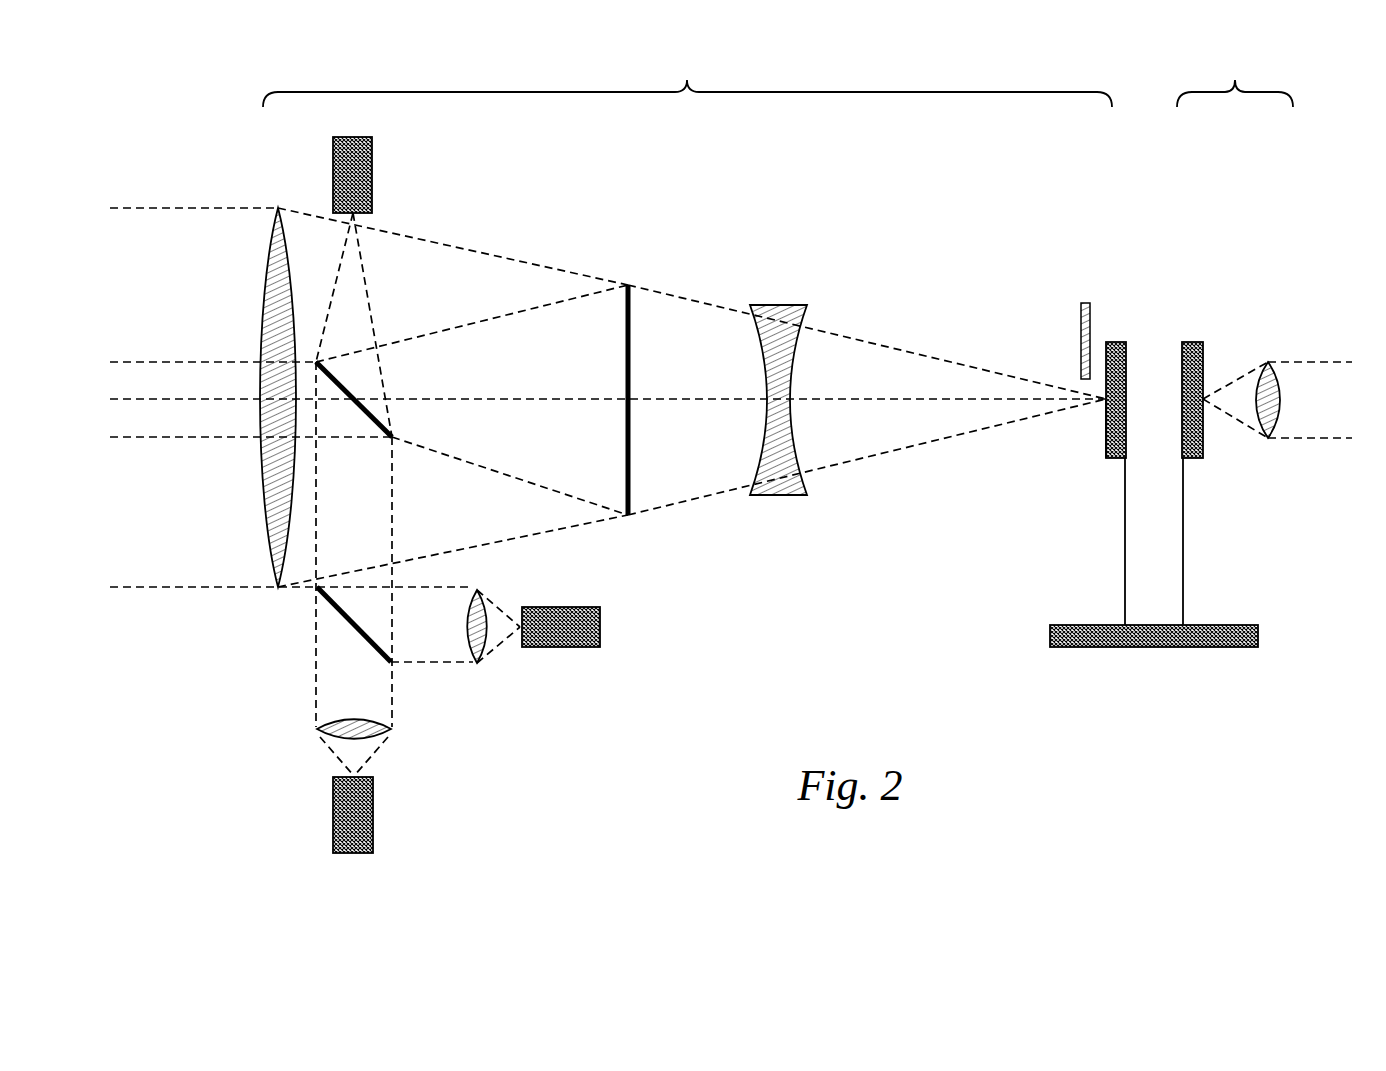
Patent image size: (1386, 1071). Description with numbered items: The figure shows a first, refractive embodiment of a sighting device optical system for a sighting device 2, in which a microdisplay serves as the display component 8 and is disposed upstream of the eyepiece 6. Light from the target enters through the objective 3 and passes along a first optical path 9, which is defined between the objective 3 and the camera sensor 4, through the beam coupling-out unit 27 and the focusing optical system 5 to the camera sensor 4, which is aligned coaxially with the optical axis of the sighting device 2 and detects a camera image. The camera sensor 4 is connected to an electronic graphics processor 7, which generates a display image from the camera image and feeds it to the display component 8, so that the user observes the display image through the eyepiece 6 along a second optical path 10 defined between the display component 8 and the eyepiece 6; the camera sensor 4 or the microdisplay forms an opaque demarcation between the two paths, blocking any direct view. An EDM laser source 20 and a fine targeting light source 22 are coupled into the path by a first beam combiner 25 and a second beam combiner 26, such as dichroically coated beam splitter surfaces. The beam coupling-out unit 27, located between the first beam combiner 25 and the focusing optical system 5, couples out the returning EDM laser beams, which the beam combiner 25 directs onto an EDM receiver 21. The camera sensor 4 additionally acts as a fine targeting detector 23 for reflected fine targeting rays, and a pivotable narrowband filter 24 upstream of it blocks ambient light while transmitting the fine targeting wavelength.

The sighting device 2 is at (1258, 805).
The objective 3 is at (277, 208).
The camera sensor 4 is at (1120, 342).
The focusing optical system 5 is at (783, 305).
The eyepiece 6 is at (1268, 362).
The electronic graphics processor 7 is at (1155, 640).
The display component 8 is at (1195, 342).
The first optical path 9 is at (687, 79).
The second optical path 10 is at (1235, 79).
The EDM laser source 20 is at (553, 637).
The EDM receiver 21 is at (367, 165).
The fine targeting light source 22 is at (367, 805).
The fine targeting detector 23 is at (1113, 458).
The narrowband filter 24 is at (1085, 303).
The first beam combiner 25 is at (393, 440).
The second beam combiner 26 is at (391, 662).
The beam coupling-out unit 27 is at (629, 285).